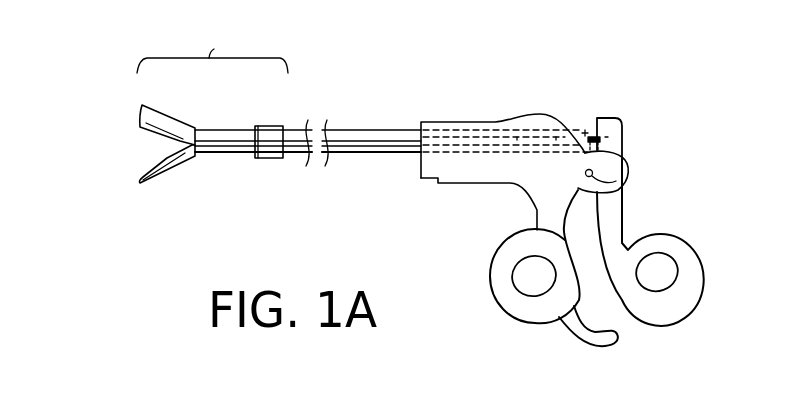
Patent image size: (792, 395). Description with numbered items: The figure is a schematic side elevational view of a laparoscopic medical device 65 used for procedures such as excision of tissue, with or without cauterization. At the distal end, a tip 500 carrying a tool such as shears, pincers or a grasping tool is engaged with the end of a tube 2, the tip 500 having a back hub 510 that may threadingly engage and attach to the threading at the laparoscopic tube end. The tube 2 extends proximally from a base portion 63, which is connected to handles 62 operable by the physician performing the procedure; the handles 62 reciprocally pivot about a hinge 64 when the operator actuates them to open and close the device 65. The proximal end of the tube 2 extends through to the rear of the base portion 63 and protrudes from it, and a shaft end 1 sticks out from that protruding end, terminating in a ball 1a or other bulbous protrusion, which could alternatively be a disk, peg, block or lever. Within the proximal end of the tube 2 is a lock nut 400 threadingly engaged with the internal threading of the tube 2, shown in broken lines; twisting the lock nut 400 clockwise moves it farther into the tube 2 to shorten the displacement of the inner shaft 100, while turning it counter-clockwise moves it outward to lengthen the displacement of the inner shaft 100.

The medical device 65 is at (99, 128).
The tip 500 is at (212, 49).
The back hub 510 is at (270, 124).
The tube 2 is at (366, 142).
The inner shaft 100 is at (452, 122).
The lock nut 400 is at (584, 132).
The shaft end 1 is at (587, 133).
The ball 1a is at (623, 127).
The hinge 64 is at (625, 168).
The handles 62 is at (666, 228).
The base portion 63 is at (488, 174).